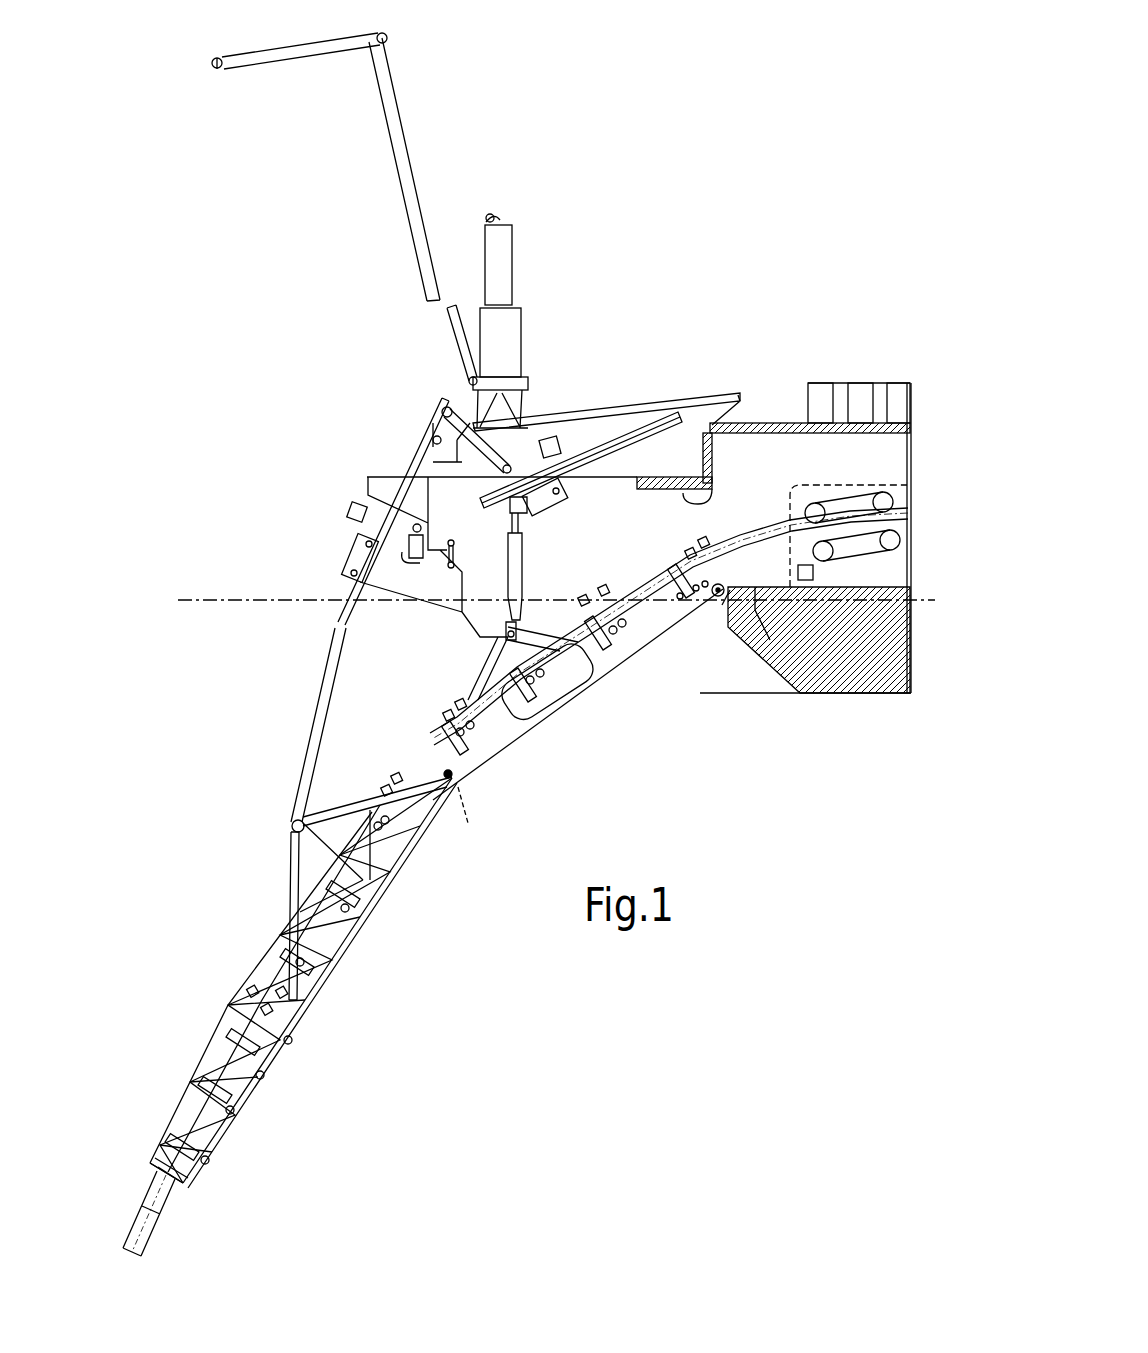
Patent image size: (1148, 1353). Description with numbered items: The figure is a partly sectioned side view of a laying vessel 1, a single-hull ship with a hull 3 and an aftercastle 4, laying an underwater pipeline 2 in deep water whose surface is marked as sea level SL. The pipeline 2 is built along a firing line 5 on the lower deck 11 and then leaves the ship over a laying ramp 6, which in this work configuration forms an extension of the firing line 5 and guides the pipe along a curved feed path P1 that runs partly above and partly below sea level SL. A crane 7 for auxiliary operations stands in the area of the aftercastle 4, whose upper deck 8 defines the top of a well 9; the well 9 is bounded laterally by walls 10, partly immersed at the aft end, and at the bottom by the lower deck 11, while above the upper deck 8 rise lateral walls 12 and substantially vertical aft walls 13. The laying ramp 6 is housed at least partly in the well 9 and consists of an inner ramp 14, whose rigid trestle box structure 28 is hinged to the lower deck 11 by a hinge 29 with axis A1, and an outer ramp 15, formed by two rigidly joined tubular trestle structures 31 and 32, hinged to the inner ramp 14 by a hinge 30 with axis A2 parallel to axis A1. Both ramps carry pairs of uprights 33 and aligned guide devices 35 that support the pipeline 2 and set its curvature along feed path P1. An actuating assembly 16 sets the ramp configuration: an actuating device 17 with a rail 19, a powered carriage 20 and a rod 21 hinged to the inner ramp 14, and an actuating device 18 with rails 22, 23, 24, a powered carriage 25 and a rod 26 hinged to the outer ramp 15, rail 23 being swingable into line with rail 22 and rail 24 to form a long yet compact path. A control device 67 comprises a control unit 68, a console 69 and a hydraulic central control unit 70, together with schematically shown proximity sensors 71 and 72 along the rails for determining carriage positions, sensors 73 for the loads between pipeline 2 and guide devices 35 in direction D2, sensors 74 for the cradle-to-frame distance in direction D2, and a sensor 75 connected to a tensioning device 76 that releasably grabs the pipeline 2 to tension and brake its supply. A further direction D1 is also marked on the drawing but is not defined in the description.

The vessel 1 is at (765, 250).
The underwater pipeline 2 is at (143, 1203).
The hull 3 is at (797, 657).
The aftercastle 4 is at (585, 395).
The firing line 5 is at (785, 505).
The laying ramp 6 is at (494, 864).
The crane 7 is at (527, 325).
The upper deck 8 is at (722, 488).
The well 9 is at (693, 525).
The walls 10 is at (741, 400).
The lower deck 11 is at (754, 602).
The lateral walls 12 is at (648, 430).
The vertical walls 13 is at (412, 585).
The inner ramp 14 is at (669, 636).
The outer ramp 15 is at (325, 975).
The actuating assembly 16 is at (335, 450).
The actuating device 17 is at (565, 557).
The actuating device 18 is at (340, 527).
The rails 19 is at (606, 448).
The powered carriages 20 is at (548, 500).
The rods 21 is at (512, 580).
The rails 22 is at (417, 468).
The rail 23 is at (437, 414).
The rail 24 is at (718, 404).
The powered carriages 25 is at (358, 548).
The rods 26 is at (318, 690).
The trestle box structure 28 is at (525, 720).
The hinge 29 is at (725, 587).
The hinge 30 is at (465, 787).
The tubular trestle structure 31 is at (318, 980).
The tubular trestle structure 32 is at (232, 1100).
The uprights 33 is at (712, 600).
The guide devices 35 is at (673, 577).
The control device 67 is at (830, 308).
The control unit 68 is at (819, 398).
The console 69 is at (860, 398).
The hydraulic central control unit 70 is at (900, 398).
The sensors 71 is at (552, 437).
The sensors 72 is at (355, 503).
The sensors 73 is at (688, 553).
The sensors 74 is at (707, 542).
The sensors 75 is at (807, 582).
The tensioning device 76 is at (885, 556).
The sea level SL is at (235, 597).
The feed path P1 is at (430, 735).
The axis A1 is at (715, 672).
The axis A2 is at (472, 821).
The first direction D1 is at (247, 940).
The direction D2 is at (650, 788).